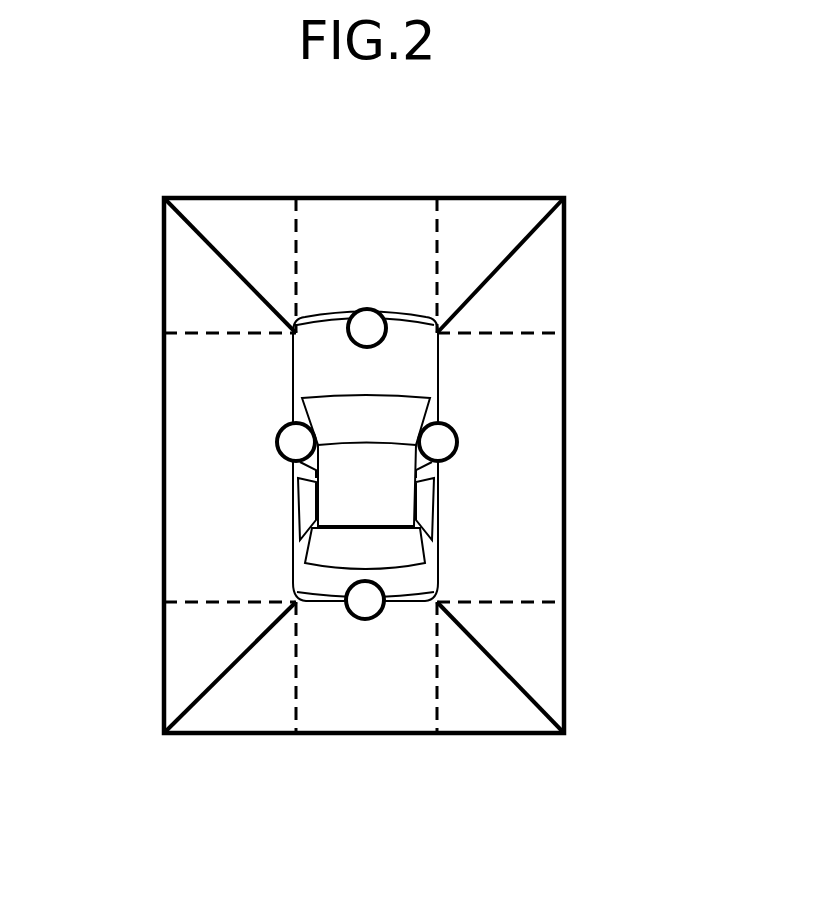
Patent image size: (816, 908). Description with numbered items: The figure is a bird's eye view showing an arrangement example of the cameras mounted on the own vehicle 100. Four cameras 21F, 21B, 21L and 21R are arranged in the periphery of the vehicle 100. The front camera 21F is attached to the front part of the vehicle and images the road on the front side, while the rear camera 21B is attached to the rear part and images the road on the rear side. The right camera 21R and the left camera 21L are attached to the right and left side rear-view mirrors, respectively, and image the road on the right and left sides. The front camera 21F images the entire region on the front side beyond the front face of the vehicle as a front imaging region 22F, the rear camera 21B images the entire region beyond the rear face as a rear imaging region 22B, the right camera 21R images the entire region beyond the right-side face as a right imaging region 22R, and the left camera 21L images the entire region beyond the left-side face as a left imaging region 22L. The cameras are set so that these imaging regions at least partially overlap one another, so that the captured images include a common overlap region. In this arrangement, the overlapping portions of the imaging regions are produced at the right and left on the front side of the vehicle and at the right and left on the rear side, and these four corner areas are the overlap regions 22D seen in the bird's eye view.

The vehicle 100 is at (332, 368).
The front camera 21F is at (367, 308).
The rear camera 21B is at (368, 622).
The left camera 21L is at (277, 441).
The right camera 21R is at (457, 420).
The front imaging region 22F is at (262, 228).
The rear imaging region 22B is at (330, 708).
The left imaging region 22L is at (203, 553).
The right imaging region 22R is at (535, 470).
The overlap regions 22D is at (222, 222).